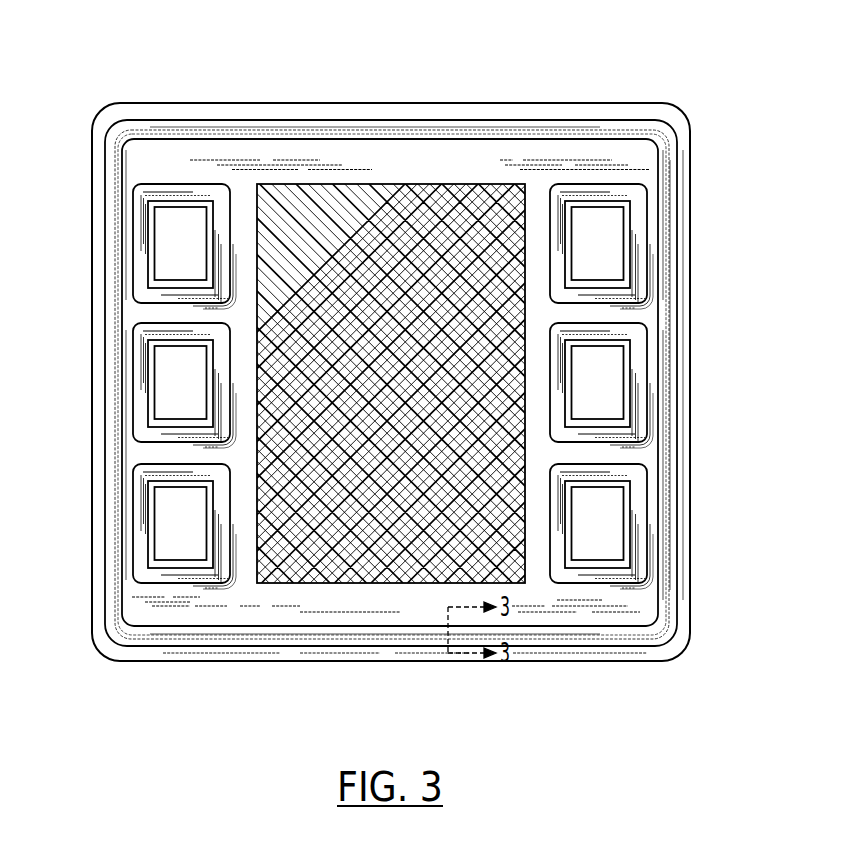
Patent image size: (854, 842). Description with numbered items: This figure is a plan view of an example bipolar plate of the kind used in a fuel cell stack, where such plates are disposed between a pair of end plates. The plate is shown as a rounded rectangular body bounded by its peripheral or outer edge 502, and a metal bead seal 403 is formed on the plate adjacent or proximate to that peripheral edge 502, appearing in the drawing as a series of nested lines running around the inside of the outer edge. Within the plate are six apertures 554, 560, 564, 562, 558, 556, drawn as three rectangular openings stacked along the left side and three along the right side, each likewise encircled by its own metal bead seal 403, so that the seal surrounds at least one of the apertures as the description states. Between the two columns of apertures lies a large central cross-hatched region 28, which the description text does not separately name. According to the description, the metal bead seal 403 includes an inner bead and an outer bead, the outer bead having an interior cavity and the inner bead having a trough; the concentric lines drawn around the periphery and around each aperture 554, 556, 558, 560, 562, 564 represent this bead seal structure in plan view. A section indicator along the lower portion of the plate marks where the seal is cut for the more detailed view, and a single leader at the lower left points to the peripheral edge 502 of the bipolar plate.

The metal bead seal 403 is at (612, 92).
The peripheral edge 502 is at (221, 662).
The central hatched region 28 is at (401, 378).
The aperture 554 is at (170, 240).
The aperture 560 is at (170, 377).
The aperture 564 is at (170, 507).
The aperture 562 is at (600, 242).
The aperture 558 is at (600, 377).
The aperture 556 is at (600, 512).